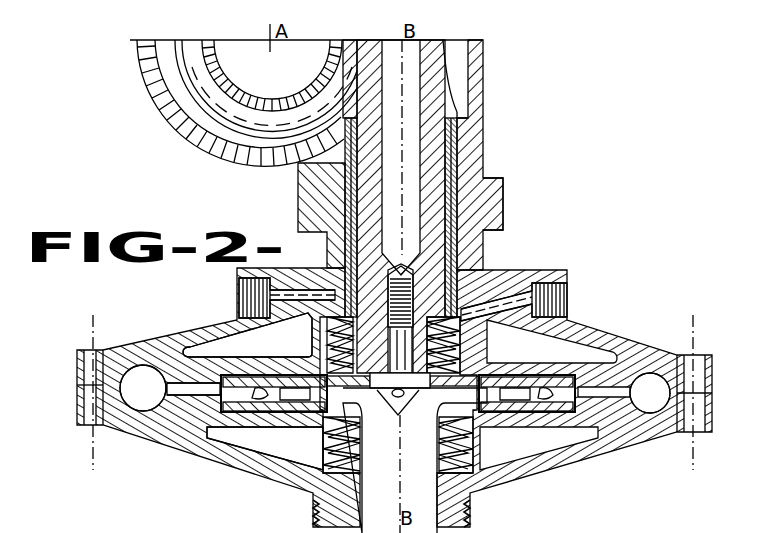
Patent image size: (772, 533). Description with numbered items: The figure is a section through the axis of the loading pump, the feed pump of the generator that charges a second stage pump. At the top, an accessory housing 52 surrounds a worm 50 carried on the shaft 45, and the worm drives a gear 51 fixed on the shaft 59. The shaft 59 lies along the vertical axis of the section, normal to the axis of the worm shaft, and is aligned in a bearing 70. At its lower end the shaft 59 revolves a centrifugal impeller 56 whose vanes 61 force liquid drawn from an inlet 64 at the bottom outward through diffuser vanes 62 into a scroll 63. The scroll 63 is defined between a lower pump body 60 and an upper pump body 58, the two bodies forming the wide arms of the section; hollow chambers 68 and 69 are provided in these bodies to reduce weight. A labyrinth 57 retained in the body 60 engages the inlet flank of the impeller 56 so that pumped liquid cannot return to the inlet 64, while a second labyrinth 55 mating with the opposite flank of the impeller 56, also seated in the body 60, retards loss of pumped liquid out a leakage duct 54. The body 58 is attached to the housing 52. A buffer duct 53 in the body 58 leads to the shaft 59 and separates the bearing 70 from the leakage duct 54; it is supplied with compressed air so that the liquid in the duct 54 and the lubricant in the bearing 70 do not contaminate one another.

The shaft 45 is at (212, 55).
The worm 50 is at (200, 103).
The gear 51 is at (470, 72).
The accessory housing 52 is at (228, 162).
The buffer duct 53 is at (236, 300).
The leakage duct 54 is at (560, 297).
The labyrinth 55 is at (473, 345).
The centrifugal impeller 56 is at (522, 398).
The labyrinth 57 is at (478, 455).
The upper pump body 58 is at (600, 348).
The shaft 59 is at (437, 197).
The lower pump body 60 is at (625, 428).
The vanes 61 is at (262, 393).
The diffuser vanes 62 is at (182, 388).
The scroll 63 is at (140, 390).
The inlet 64 is at (423, 507).
The hollow chamber 68 is at (205, 348).
The hollow chamber 69 is at (275, 445).
The bearing 70 is at (453, 157).